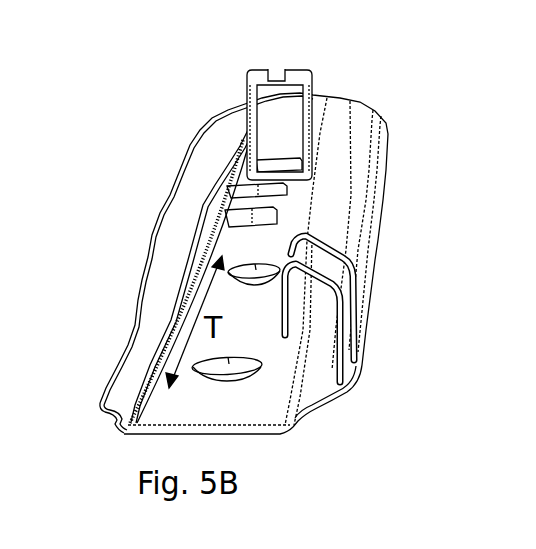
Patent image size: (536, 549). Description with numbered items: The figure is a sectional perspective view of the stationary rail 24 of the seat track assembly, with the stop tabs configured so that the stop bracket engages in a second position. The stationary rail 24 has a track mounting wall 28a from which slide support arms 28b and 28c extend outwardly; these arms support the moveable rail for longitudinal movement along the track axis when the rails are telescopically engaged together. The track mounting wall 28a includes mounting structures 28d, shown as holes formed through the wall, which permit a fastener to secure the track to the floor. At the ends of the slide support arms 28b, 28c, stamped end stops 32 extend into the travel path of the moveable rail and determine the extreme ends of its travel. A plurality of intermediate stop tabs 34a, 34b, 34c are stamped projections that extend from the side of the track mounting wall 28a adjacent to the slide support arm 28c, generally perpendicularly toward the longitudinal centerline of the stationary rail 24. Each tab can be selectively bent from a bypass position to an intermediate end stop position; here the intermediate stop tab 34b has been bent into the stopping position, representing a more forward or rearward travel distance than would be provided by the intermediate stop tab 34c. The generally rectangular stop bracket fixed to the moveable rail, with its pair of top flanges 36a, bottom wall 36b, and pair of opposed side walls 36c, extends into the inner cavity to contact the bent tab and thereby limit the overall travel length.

The stationary rail 24 is at (411, 157).
The track mounting wall 28a is at (280, 387).
The slide support arm 28b is at (333, 188).
The slide support arm 28c is at (137, 377).
The mounting structures 28d is at (238, 368).
The end stops 32 is at (344, 276).
The intermediate stop tab 34a is at (222, 210).
The intermediate stop tab 34b is at (247, 190).
The intermediate stop tab 34c is at (272, 150).
The top flanges 36a is at (288, 78).
The bottom wall 36b is at (283, 166).
The side walls 36c is at (253, 110).